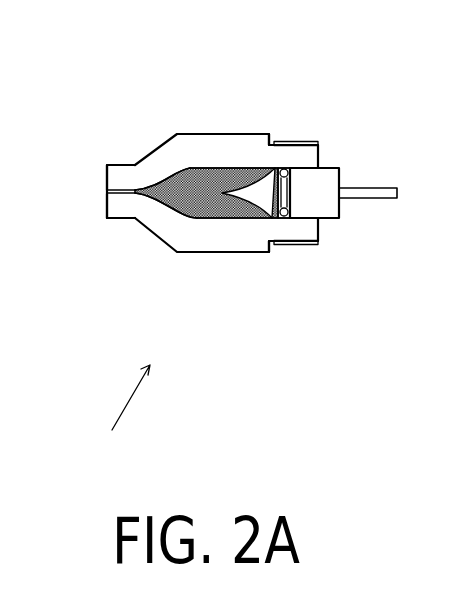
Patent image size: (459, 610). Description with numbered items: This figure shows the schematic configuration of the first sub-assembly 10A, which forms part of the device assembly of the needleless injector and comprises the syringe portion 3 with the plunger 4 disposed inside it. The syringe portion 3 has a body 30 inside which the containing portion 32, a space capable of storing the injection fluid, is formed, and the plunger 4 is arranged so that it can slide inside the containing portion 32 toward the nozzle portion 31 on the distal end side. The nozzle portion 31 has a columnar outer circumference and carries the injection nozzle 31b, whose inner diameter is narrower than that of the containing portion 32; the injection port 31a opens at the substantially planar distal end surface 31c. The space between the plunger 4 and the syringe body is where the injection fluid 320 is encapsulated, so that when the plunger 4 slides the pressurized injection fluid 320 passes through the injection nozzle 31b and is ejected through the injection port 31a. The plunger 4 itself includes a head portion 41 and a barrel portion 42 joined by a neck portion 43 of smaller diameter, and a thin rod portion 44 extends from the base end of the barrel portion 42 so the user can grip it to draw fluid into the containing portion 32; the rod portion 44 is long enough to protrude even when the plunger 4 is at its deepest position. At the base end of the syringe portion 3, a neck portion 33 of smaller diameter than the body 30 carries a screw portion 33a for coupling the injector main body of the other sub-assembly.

The syringe portion 3 is at (353, 45).
The body 30 is at (207, 142).
The nozzle portion 31 is at (119, 183).
The injection port 31a is at (107, 216).
The injection nozzle 31b is at (128, 219).
The distal end surface 31c is at (100, 219).
The injection fluid 320 is at (178, 184).
The containing portion 32 is at (242, 167).
The neck portion 33 is at (275, 143).
The screw portion 33a is at (312, 143).
The plunger 4 is at (390, 307).
The head portion 41 is at (258, 194).
The barrel portion 42 is at (332, 205).
The neck portion 43 is at (283, 222).
The rod portion 44 is at (387, 200).
The sub-assembly 10A is at (121, 460).